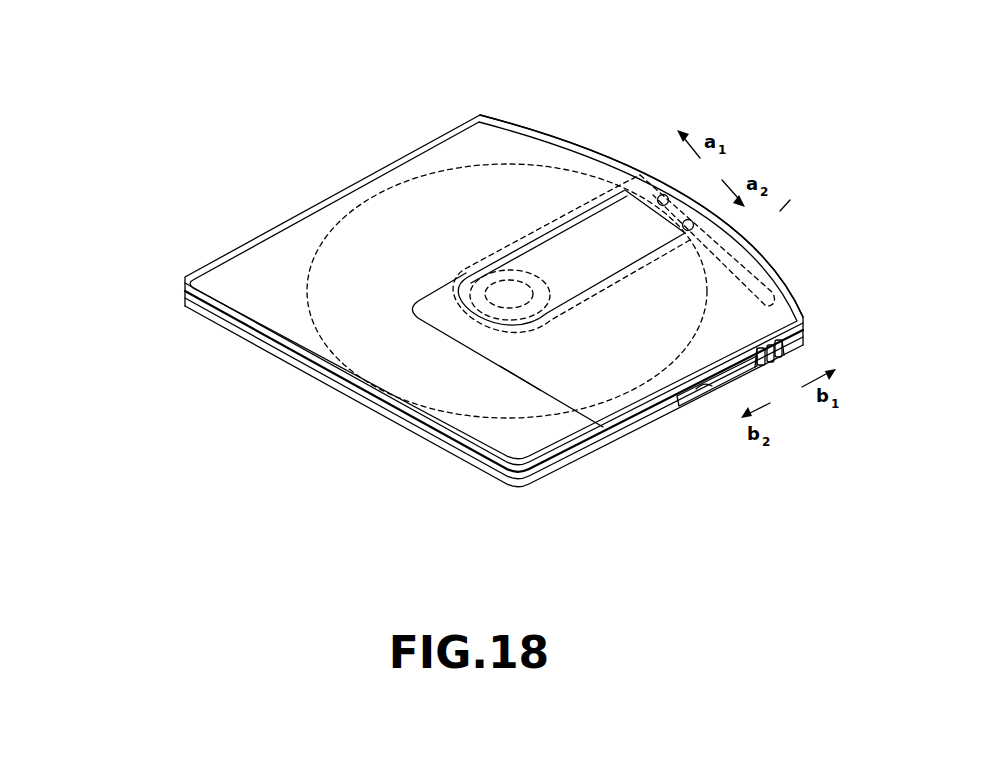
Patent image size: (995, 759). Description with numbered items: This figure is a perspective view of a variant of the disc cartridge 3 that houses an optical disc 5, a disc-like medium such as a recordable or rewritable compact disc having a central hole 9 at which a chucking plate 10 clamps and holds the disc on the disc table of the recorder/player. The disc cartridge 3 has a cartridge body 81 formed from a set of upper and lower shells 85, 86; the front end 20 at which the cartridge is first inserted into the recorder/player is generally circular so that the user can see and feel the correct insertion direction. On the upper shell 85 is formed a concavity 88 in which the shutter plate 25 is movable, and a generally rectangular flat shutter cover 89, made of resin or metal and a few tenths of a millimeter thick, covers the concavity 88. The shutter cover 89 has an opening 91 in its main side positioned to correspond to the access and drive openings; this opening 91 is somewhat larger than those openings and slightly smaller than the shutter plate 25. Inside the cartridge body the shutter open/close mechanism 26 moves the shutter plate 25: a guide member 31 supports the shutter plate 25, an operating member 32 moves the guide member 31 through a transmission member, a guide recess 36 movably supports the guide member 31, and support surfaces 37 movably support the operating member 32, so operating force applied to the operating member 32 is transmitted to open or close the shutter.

The disc cartridge 3 is at (428, 279).
The optical disc 5 is at (363, 228).
The central hole 9 is at (533, 279).
The chucking plate 10 is at (513, 243).
The front end 20 is at (588, 143).
The shutter plate 25 is at (557, 312).
The shutter open/close mechanism 26 is at (786, 203).
The guide member 31 is at (686, 212).
The operating member 32 is at (772, 363).
The guide recess 36 is at (766, 282).
The support surfaces 37 is at (713, 390).
The cartridge body 81 is at (428, 374).
The upper shell 85 is at (189, 307).
The lower shell 86 is at (189, 295).
The concavity 88 is at (438, 323).
The shutter cover 89 is at (520, 359).
The opening 91 is at (567, 228).